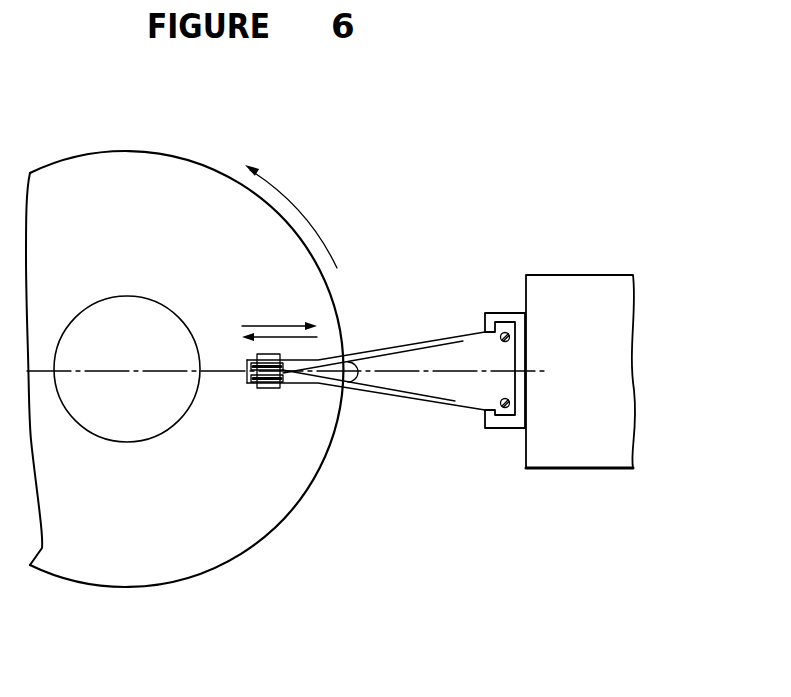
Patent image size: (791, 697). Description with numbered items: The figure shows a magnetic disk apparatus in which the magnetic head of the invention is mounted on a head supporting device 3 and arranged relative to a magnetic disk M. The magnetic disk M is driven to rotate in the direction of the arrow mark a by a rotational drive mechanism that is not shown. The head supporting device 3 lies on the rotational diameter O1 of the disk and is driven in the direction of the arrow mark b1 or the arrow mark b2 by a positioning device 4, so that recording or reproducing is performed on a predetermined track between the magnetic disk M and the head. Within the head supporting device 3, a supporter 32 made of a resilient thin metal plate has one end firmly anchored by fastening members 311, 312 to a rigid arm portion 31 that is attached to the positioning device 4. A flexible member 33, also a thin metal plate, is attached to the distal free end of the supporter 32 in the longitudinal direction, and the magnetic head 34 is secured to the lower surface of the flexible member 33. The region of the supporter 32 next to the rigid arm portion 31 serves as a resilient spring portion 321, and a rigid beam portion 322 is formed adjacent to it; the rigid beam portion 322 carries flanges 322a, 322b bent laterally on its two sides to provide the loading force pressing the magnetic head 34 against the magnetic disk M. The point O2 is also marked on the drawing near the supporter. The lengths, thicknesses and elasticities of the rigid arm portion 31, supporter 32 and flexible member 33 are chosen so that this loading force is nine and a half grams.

The magnetic disk M is at (224, 565).
The rotational diameter O1 is at (146, 373).
The arrow mark a is at (308, 222).
The arrow mark b1 is at (300, 339).
The arrow mark b2 is at (279, 313).
The head supporting device 3 is at (424, 288).
The rigid arm portion 31 is at (495, 312).
The fastening member 311 is at (507, 333).
The fastening member 312 is at (505, 408).
The supporter 32 is at (366, 400).
The resilient spring portion 321 is at (463, 345).
The rigid beam portion 322 is at (401, 366).
The flange 322a is at (355, 353).
The flange 322b is at (412, 402).
The pivot point of leaf springs O2 is at (385, 376).
The flexible member 33 is at (288, 388).
The magnetic head 34 is at (267, 388).
The positioning device 4 is at (578, 298).